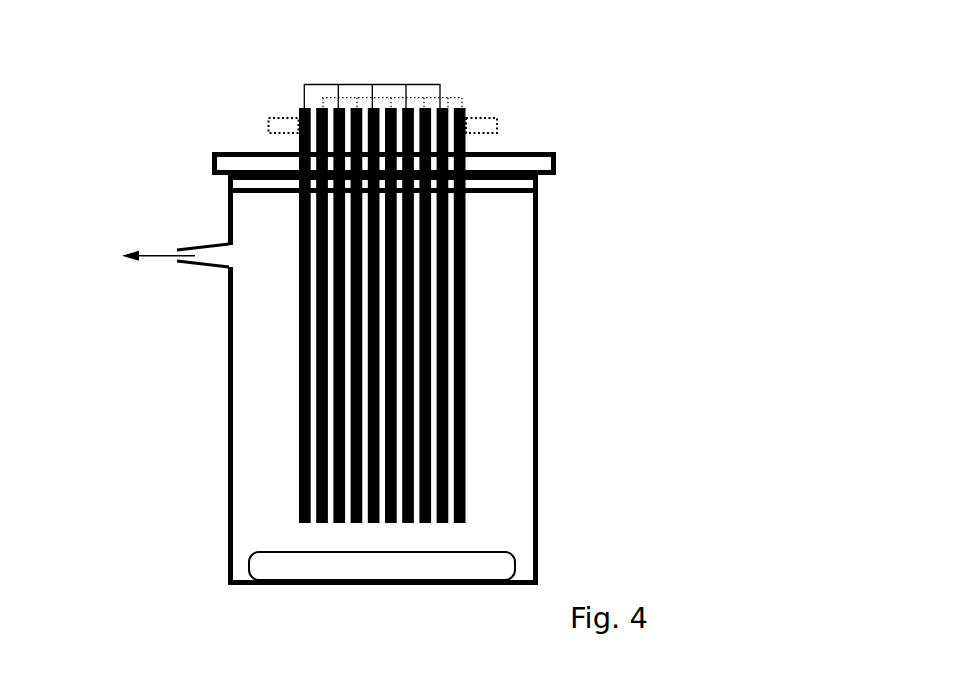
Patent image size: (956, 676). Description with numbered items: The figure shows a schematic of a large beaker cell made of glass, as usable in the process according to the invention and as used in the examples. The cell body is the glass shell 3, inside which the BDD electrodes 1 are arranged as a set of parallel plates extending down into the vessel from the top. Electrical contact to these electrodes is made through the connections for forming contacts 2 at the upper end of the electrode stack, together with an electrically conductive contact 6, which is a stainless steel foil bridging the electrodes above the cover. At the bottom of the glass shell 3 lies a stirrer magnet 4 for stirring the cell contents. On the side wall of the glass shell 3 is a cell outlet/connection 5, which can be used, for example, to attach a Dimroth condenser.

The BDD electrodes 1 is at (466, 142).
The connections for forming contacts 2 is at (268, 125).
The glass shell 3 is at (538, 291).
The stirrer magnet 4 is at (517, 568).
The cell outlet/connection 5 is at (107, 256).
The electrically conductive contact 6 is at (449, 96).